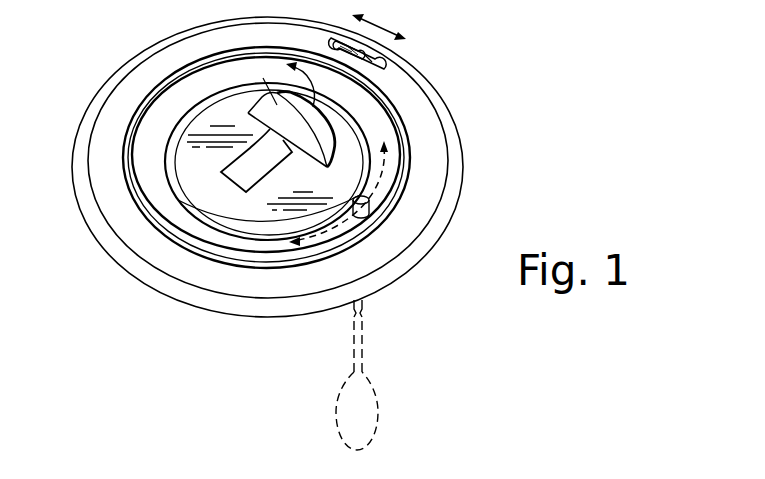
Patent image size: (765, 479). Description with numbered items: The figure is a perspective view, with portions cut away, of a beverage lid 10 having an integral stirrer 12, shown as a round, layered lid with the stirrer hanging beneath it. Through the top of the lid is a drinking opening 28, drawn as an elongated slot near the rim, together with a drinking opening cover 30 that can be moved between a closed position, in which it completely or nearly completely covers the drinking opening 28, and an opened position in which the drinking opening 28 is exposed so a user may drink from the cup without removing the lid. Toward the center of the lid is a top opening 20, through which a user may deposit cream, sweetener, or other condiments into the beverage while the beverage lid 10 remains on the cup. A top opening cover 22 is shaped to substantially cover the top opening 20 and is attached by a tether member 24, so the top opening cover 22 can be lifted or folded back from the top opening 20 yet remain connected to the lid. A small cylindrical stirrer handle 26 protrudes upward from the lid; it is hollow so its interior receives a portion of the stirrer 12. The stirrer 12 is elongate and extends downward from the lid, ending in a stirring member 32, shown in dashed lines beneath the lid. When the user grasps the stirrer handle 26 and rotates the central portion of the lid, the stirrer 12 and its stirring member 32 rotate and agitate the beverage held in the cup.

The beverage lid 10 is at (549, 105).
The stirrer 12 is at (384, 351).
The top opening 20 is at (326, 128).
The top opening cover 22 is at (263, 80).
The tether member 24 is at (233, 168).
The stirrer handle 26 is at (370, 220).
The drinking opening 28 is at (384, 62).
The drinking opening cover 30 is at (384, 58).
The stirring member 32 is at (379, 412).